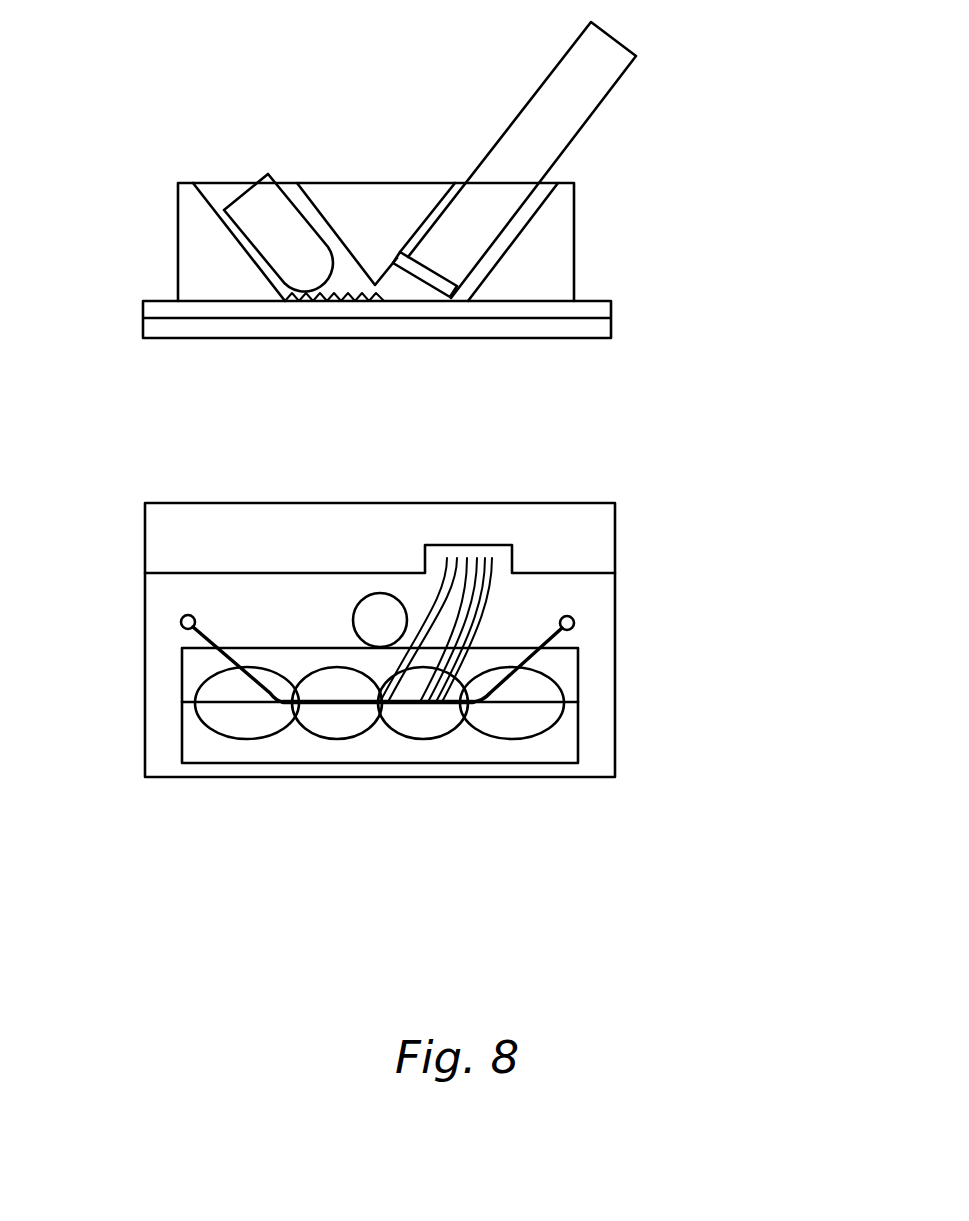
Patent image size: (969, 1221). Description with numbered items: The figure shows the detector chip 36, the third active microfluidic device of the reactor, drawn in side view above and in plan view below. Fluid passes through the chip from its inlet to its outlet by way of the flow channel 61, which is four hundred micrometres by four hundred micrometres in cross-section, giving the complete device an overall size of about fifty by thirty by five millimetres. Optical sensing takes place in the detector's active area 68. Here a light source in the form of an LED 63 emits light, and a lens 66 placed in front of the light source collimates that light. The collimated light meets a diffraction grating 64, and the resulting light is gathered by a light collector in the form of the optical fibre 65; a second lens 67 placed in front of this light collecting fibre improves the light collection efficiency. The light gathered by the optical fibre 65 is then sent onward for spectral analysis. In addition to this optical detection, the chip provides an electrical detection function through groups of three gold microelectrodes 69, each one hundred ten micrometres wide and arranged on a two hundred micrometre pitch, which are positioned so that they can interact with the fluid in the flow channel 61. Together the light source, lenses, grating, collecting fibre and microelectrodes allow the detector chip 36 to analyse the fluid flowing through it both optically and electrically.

The detector chip 36 is at (408, 822).
The flow channel 61 is at (543, 645).
The LED 63 is at (247, 195).
The diffraction grating 64 is at (380, 299).
The optical fibre 65 is at (613, 74).
The lens 66 is at (288, 275).
The lens 67 is at (402, 250).
The active area 68 is at (321, 708).
The gold microelectrodes 69 is at (498, 562).